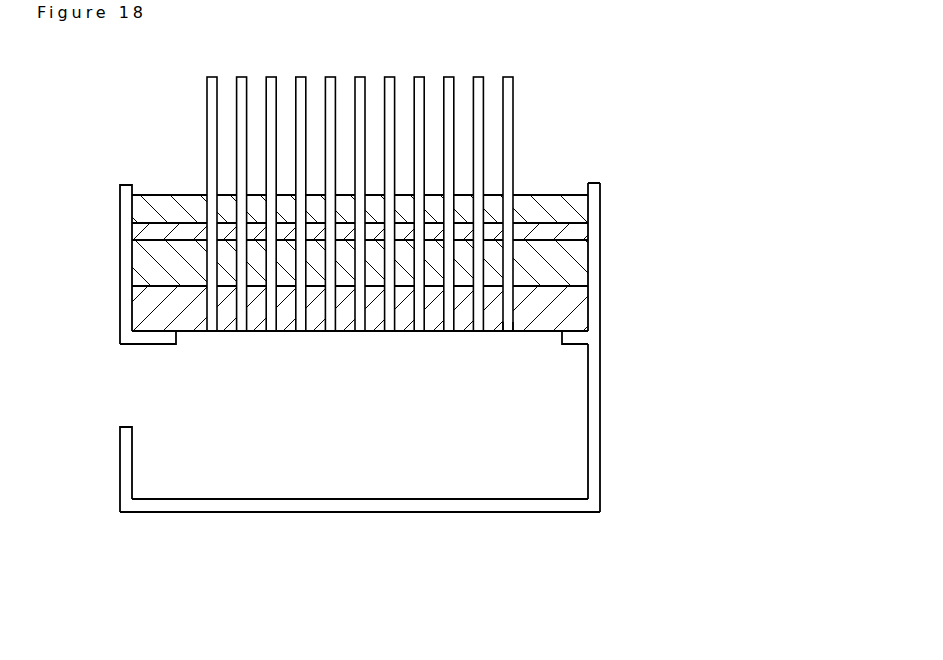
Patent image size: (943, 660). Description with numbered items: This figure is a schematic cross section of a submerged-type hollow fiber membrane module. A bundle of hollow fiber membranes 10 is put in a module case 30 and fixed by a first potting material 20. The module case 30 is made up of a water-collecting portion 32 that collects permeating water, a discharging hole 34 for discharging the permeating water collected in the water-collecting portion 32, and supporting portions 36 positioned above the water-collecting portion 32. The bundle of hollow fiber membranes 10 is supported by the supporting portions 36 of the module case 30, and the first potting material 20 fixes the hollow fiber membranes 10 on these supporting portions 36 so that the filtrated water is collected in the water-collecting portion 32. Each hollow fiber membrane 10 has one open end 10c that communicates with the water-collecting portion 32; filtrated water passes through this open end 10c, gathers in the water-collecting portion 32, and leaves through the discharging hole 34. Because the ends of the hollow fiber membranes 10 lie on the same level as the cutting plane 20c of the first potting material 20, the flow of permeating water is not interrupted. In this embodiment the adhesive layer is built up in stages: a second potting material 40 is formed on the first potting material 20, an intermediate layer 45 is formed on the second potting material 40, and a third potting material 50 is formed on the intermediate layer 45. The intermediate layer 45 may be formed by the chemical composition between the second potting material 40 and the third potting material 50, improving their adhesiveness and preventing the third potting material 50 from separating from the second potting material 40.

The hollow fiber membranes 10 is at (513, 88).
The open end 10c is at (507, 333).
The first potting material 20 is at (573, 308).
The cutting plane 20c is at (283, 333).
The module case 30 is at (602, 443).
The water-collecting portion 32 is at (458, 443).
The discharging hole 34 is at (140, 386).
The supporting portions 36 is at (565, 335).
The second potting material 40 is at (578, 268).
The intermediate layer 45 is at (565, 231).
The third potting material 50 is at (557, 197).